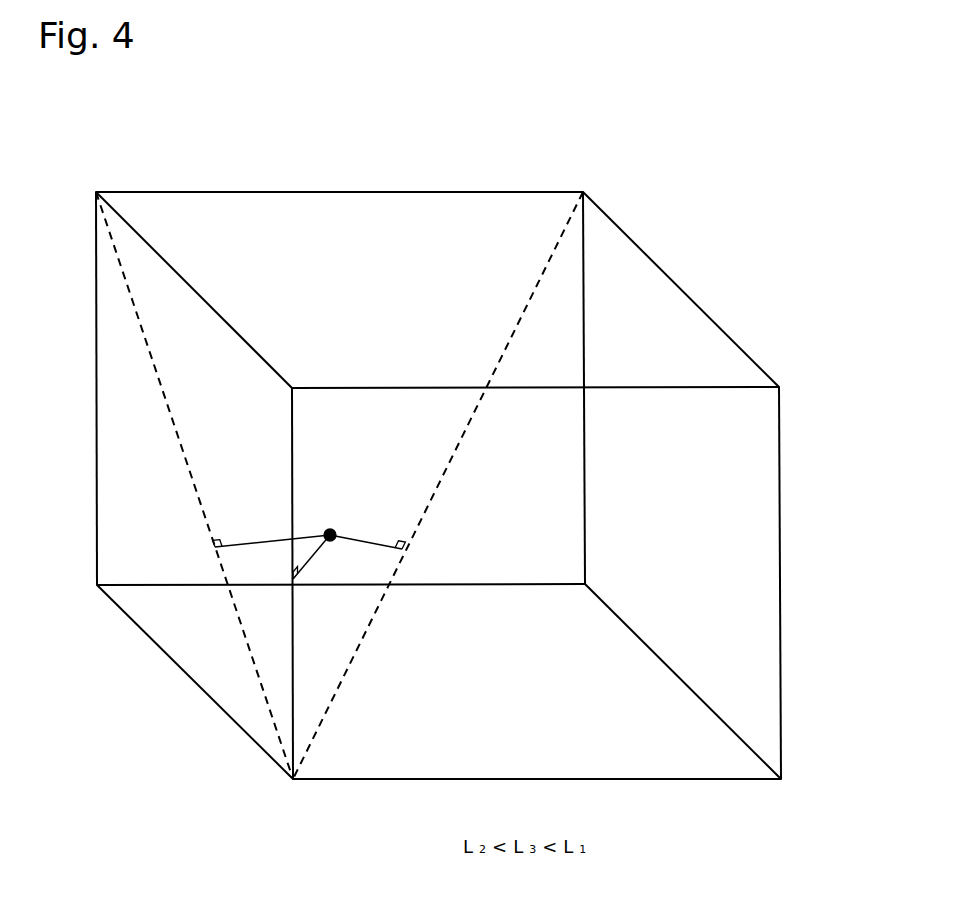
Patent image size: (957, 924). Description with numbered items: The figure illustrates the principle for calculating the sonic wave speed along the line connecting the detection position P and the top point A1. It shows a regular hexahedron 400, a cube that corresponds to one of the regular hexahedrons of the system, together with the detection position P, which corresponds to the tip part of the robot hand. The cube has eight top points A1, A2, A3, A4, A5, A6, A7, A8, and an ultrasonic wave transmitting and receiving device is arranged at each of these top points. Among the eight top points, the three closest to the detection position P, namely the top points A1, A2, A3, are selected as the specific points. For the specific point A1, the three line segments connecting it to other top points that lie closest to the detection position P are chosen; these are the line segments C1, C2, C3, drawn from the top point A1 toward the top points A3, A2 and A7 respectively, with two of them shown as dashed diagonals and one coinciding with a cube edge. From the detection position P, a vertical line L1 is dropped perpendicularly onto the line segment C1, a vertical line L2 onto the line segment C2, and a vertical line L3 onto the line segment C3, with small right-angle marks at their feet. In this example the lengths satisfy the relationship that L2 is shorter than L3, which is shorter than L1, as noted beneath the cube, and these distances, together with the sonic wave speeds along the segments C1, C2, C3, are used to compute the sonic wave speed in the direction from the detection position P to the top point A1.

The regular hexahedron 400 is at (413, 189).
The top point A1 is at (295, 793).
The top point A2 is at (311, 376).
The top point A3 is at (99, 175).
The top point A4 is at (76, 591).
The top point A5 is at (798, 790).
The top point A6 is at (800, 375).
The top point A7 is at (599, 177).
The top point A8 is at (607, 574).
The detection position P is at (330, 523).
The line segment C1 is at (194, 485).
The line segment C2 is at (306, 583).
The line segment C3 is at (438, 485).
The vertical line L1 is at (271, 533).
The vertical line L2 is at (313, 557).
The vertical line L3 is at (367, 534).